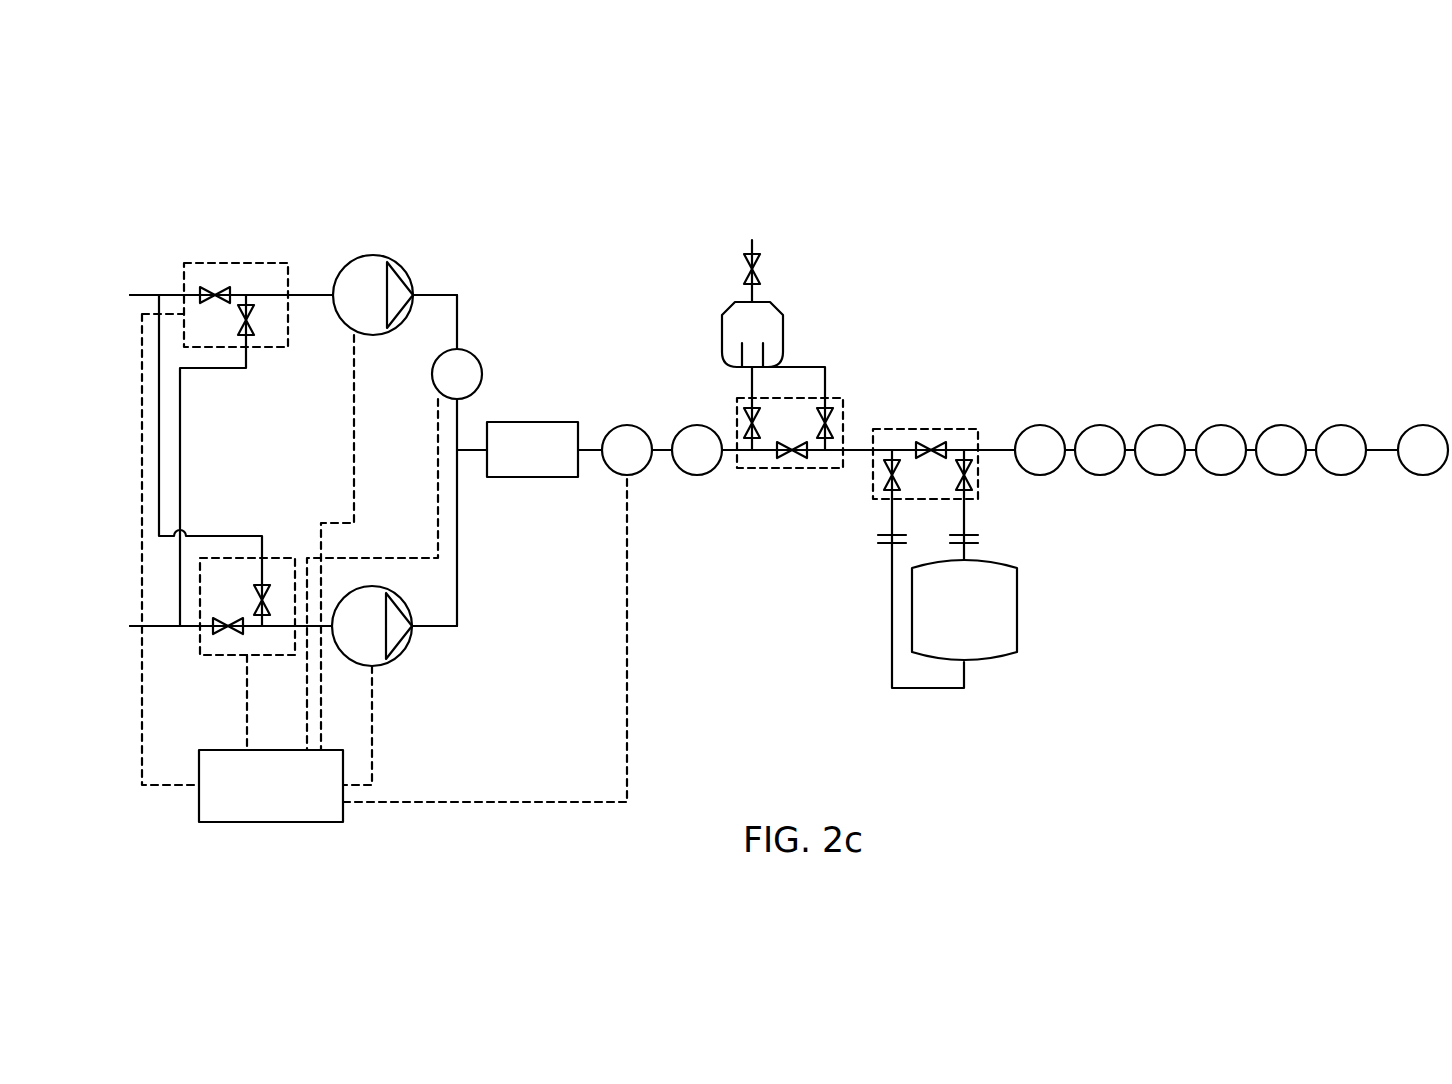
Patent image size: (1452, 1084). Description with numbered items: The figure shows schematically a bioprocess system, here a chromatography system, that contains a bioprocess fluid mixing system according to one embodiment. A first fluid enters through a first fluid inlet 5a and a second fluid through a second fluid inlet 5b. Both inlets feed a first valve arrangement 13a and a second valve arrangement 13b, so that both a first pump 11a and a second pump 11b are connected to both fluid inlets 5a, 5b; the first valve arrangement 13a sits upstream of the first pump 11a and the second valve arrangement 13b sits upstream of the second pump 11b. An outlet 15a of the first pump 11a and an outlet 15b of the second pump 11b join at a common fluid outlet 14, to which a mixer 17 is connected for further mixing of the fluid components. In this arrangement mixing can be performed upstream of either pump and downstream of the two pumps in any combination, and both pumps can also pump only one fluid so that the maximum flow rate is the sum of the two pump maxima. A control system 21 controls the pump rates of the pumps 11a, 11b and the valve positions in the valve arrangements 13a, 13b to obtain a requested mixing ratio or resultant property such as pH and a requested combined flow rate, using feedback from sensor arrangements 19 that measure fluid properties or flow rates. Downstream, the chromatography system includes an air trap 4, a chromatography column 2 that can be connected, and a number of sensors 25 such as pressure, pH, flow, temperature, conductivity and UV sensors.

The chromatography column 2 is at (945, 558).
The air trap 4 is at (782, 354).
The first fluid inlet 5a is at (131, 287).
The second fluid inlet 5b is at (130, 636).
The first pump 11a is at (370, 256).
The second pump 11b is at (380, 664).
The first valve arrangement 13a is at (236, 259).
The second valve arrangement 13b is at (198, 664).
The common fluid outlet 14 is at (470, 448).
The outlet of the first pump 15a is at (414, 293).
The outlet of the second pump 15b is at (413, 629).
The mixer 17 is at (533, 421).
The sensor arrangement 19 is at (470, 350).
The control system 21 is at (384, 568).
The sensors 25 is at (697, 477).